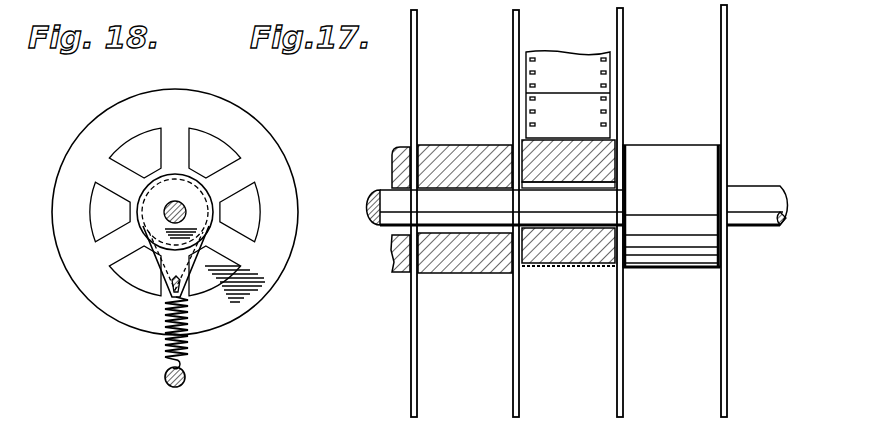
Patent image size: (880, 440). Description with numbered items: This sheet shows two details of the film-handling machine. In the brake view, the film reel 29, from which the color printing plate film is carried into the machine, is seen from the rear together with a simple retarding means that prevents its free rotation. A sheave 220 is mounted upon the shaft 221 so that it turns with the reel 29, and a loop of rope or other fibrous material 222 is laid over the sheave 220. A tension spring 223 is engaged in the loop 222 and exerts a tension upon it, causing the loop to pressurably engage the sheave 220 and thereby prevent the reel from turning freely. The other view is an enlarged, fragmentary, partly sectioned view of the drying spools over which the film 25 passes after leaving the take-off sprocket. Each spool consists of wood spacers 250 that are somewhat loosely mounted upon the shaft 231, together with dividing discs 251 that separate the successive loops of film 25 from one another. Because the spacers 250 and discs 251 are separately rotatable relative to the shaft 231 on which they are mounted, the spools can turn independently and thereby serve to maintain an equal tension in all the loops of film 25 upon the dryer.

In FIG. 18, the film reel 29 is at (255, 138).
In FIG. 18, the sheave 220 is at (198, 222).
In FIG. 18, the shaft 221 is at (168, 214).
In FIG. 18, the loop of rope 222 is at (197, 282).
In FIG. 18, the tension spring 223 is at (163, 338).
In FIG. 17, the film 25 is at (570, 75).
In FIG. 17, the wood spacers 250 is at (478, 128).
In FIG. 17, the dividing discs 251 is at (617, 90).
In FIG. 17, the shaft 231 is at (458, 215).